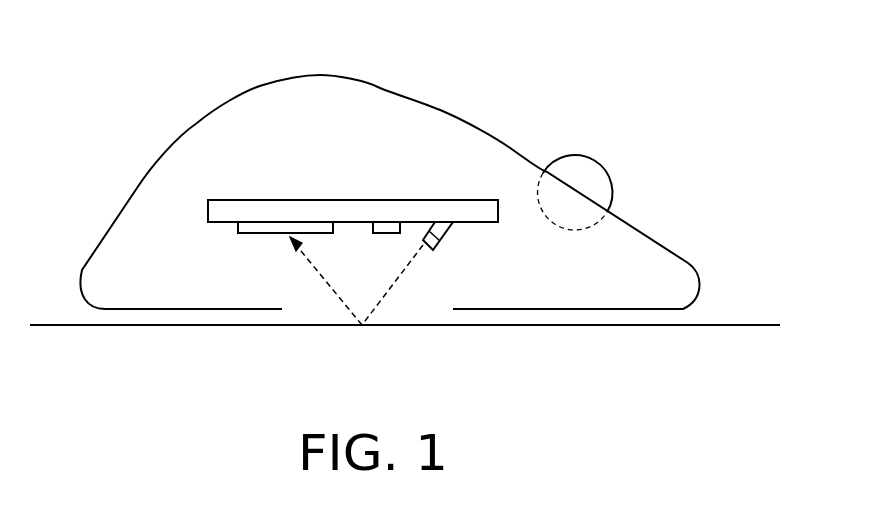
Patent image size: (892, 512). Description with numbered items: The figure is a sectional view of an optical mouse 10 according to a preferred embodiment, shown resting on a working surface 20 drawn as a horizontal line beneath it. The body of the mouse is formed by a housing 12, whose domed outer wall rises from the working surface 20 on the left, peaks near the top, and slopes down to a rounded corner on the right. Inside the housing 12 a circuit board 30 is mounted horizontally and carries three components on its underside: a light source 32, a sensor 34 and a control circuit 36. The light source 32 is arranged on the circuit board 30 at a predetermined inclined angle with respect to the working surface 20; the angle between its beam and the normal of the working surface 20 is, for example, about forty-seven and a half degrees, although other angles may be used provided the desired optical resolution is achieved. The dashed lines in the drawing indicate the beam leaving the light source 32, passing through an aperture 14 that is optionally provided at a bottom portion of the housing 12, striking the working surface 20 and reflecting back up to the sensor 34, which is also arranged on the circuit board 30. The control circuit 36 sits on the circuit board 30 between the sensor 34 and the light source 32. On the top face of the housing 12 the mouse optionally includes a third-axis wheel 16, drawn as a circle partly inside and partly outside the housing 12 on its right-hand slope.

The optical mouse 10 is at (229, 41).
The housing 12 is at (138, 182).
The aperture 14 is at (410, 313).
The third-axis wheel 16 is at (577, 155).
The working surface 20 is at (747, 325).
The circuit board 30 is at (428, 210).
The light source 32 is at (447, 238).
The sensor 34 is at (257, 228).
The control circuit 36 is at (388, 226).